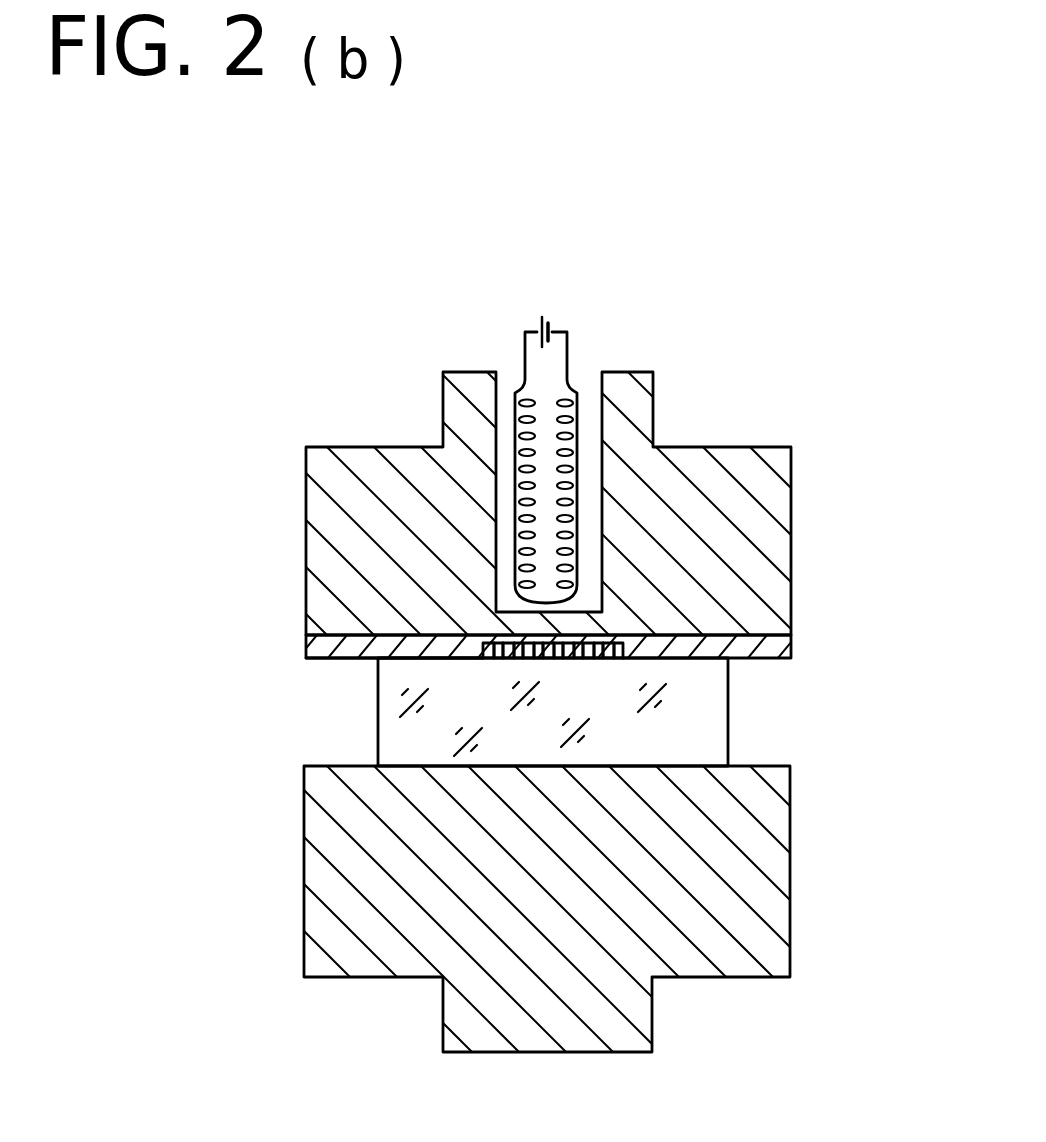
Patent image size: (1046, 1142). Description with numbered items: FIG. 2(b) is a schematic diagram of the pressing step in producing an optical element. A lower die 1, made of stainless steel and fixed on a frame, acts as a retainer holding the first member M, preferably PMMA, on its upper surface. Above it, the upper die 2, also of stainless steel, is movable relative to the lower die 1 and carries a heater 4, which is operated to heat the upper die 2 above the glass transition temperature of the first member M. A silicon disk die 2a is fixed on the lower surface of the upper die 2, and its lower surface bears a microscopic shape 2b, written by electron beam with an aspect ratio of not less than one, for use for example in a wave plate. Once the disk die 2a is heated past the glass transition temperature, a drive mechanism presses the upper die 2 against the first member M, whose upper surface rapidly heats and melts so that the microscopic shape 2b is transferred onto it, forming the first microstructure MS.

The lower die 1 is at (763, 845).
The upper die 2 is at (763, 500).
The disk die 2a is at (792, 650).
The microscopic shape 2b is at (483, 660).
The first microstructure MS is at (627, 657).
The first member M is at (728, 743).
The heater 4 is at (525, 350).